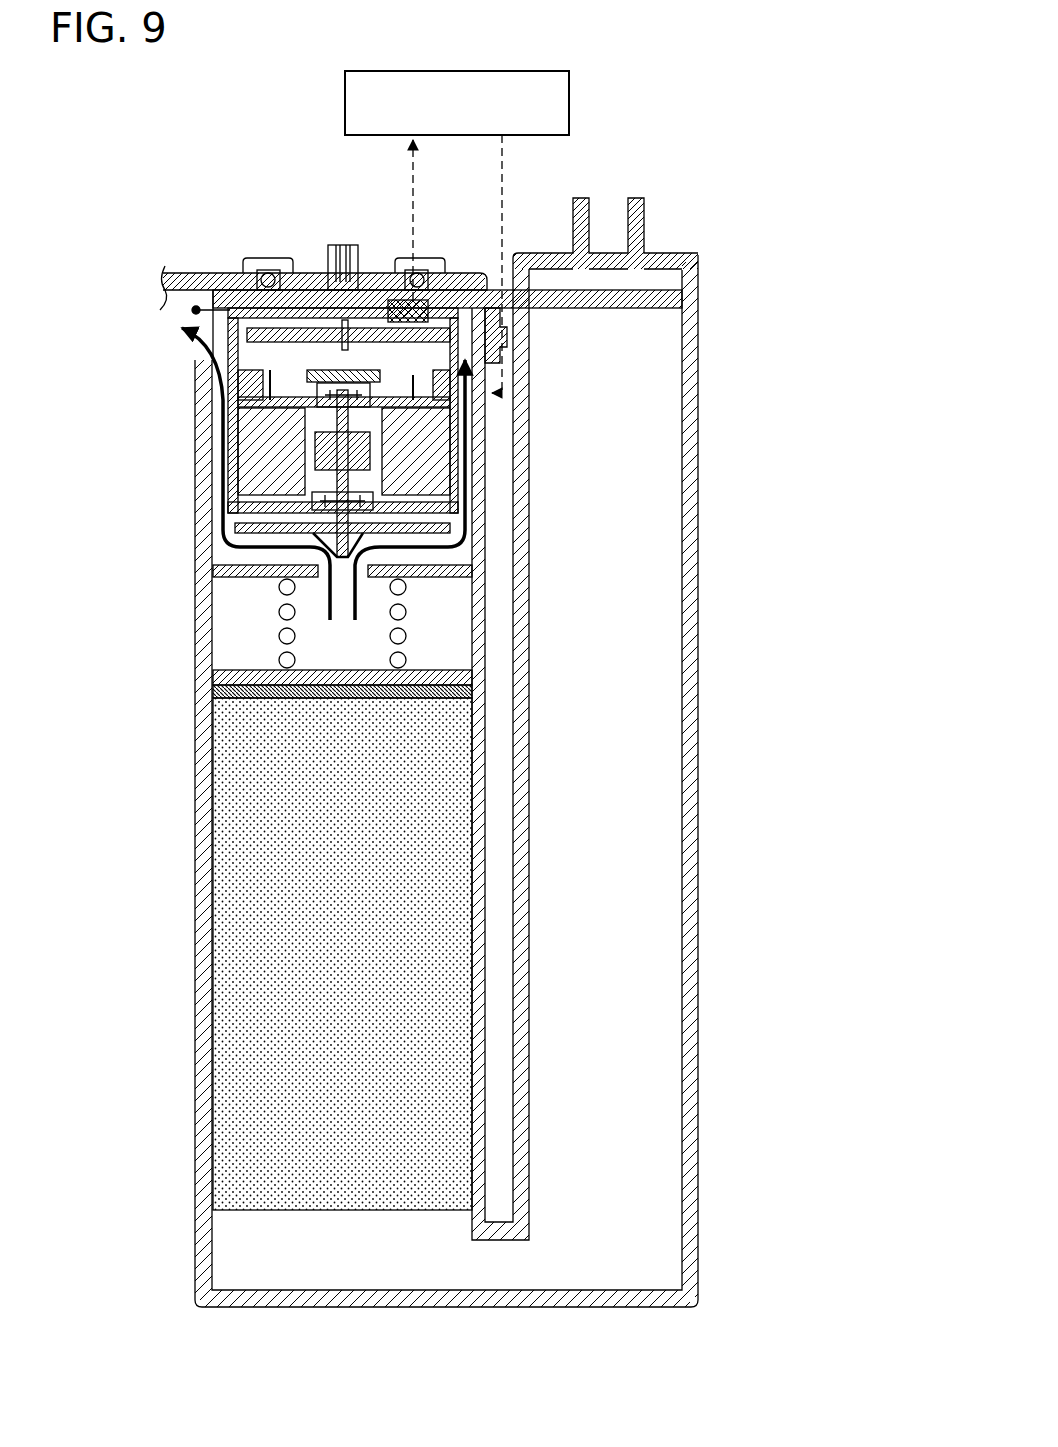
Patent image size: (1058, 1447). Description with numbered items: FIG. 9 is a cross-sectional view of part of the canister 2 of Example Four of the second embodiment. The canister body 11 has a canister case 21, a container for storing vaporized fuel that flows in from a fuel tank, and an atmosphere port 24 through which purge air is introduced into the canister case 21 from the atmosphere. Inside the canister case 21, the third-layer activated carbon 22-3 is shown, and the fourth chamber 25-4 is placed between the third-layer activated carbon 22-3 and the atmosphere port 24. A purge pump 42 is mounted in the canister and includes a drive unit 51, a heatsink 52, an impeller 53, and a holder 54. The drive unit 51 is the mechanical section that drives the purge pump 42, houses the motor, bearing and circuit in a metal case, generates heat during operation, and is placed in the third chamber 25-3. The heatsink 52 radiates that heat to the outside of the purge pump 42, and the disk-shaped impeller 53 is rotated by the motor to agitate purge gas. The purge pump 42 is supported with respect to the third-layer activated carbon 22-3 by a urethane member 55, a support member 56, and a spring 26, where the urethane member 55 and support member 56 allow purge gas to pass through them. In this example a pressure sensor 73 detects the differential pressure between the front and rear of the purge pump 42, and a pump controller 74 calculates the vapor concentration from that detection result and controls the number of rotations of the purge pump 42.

The canister 2 is at (634, 124).
The canister body 11 is at (710, 966).
The canister case 21 is at (688, 1020).
The third-layer activated carbon 22-3 is at (315, 1165).
The atmosphere port 24 is at (632, 233).
The third chamber 25-3 is at (437, 618).
The fourth chamber 25-4 is at (600, 1218).
The spring 26 is at (288, 636).
The purge pump 42 is at (478, 418).
The drive unit 51 is at (433, 458).
The heatsink 52 is at (300, 292).
The impeller 53 is at (440, 548).
The holder 54 is at (453, 568).
The urethane member 55 is at (430, 700).
The support member 56 is at (442, 670).
The pressure sensor 73 is at (395, 298).
The pump controller 74 is at (514, 70).